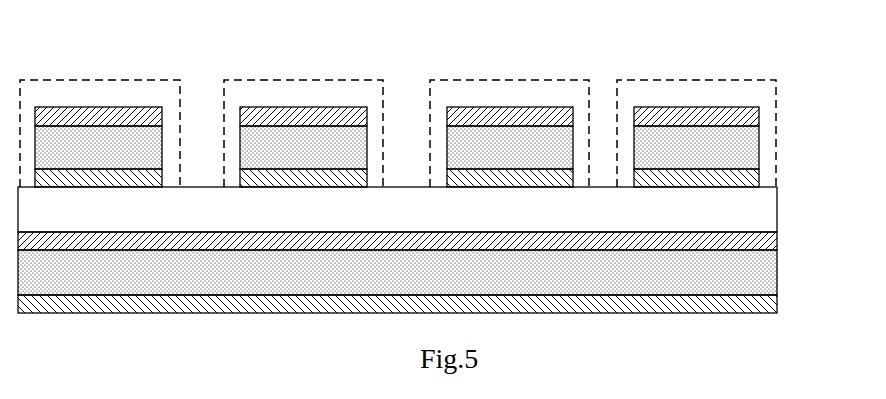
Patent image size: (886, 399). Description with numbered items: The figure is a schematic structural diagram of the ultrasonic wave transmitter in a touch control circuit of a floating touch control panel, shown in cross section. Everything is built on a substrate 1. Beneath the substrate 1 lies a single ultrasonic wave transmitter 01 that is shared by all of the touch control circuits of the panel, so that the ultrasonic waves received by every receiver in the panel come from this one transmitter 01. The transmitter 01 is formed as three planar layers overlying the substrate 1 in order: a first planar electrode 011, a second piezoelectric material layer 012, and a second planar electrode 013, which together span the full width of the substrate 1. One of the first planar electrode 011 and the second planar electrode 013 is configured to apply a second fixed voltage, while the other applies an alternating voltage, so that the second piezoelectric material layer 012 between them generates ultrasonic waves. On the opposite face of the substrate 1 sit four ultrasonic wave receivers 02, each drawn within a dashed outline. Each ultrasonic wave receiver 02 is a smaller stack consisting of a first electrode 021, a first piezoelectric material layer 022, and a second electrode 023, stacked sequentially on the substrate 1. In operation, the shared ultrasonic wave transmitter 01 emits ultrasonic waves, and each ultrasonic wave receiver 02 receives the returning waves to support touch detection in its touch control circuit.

The substrate 1 is at (758, 213).
The ultrasonic wave transmitter 01 is at (448, 275).
The first planar electrode 011 is at (765, 241).
The second piezoelectric material layer 012 is at (765, 277).
The second planar electrode 013 is at (430, 305).
The ultrasonic wave receiver 02 is at (434, 99).
The first electrode 021 is at (745, 180).
The first piezoelectric material layer 022 is at (740, 148).
The second electrode 023 is at (745, 115).